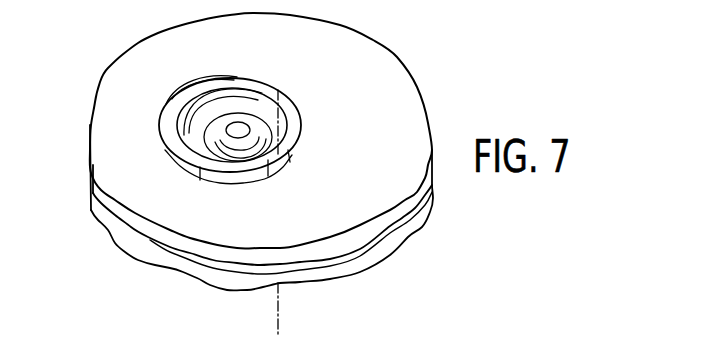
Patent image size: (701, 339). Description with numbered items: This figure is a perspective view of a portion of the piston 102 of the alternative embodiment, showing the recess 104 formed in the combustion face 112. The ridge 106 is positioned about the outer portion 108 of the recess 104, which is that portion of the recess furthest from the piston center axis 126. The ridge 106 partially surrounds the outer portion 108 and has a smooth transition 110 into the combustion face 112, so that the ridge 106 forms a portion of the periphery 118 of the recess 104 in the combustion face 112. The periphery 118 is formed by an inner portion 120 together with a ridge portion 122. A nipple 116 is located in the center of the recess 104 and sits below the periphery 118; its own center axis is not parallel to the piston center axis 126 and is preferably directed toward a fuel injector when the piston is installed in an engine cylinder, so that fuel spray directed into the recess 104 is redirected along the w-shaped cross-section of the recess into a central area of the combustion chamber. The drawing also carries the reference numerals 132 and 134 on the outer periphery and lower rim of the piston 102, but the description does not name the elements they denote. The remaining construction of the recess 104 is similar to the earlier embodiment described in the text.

The piston 102 is at (490, 78).
The recess 104 is at (292, 68).
The ridge 106 is at (182, 160).
The outer portion 108 is at (303, 110).
The smooth transition 110 is at (227, 80).
The combustion face 112 is at (141, 137).
The nipple 116 is at (251, 108).
The periphery 118 is at (313, 131).
The inner portion 120 is at (280, 88).
The ridge portion 122 is at (200, 180).
The piston center axis 126 is at (281, 313).
The outer periphery 132 is at (392, 54).
The seal gasket 134 is at (135, 240).